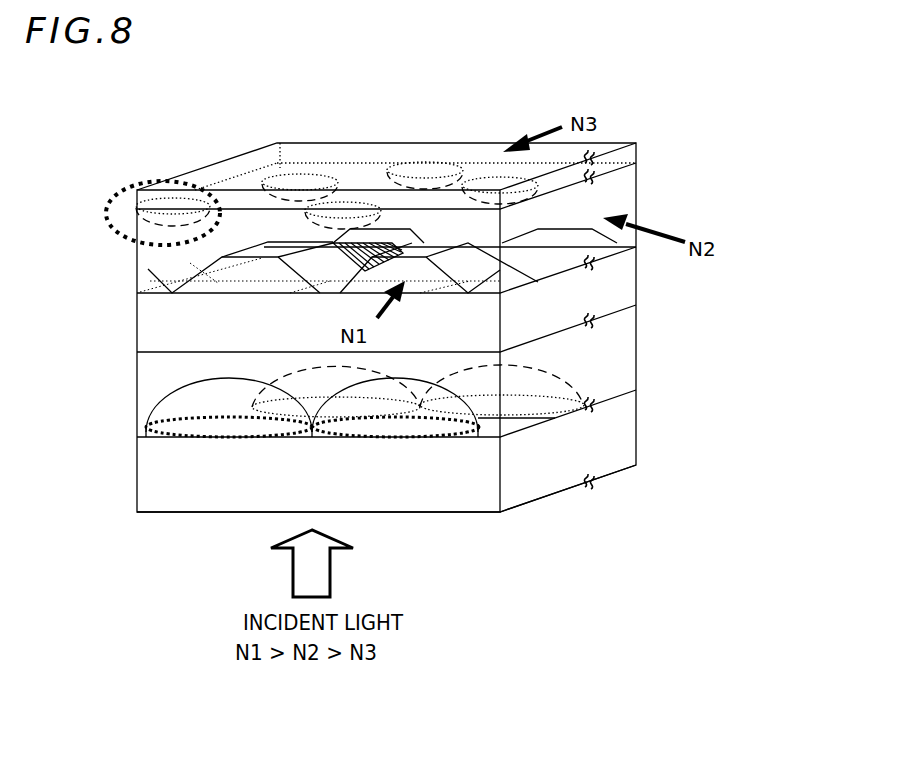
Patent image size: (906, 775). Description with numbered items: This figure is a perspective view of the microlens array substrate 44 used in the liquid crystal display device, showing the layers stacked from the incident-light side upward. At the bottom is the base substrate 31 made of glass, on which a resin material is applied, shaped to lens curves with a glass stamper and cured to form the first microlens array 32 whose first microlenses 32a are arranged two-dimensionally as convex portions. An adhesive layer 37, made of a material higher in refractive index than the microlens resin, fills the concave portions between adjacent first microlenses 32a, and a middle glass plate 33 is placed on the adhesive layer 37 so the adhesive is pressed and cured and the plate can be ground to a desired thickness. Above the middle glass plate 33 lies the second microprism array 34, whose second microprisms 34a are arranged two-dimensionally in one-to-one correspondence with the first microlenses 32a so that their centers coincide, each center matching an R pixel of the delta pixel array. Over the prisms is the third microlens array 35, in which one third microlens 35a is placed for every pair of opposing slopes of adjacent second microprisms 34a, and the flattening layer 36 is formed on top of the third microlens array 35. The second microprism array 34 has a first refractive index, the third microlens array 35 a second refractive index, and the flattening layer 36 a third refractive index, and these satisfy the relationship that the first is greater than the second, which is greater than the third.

The microlens array substrate 44 is at (419, 106).
The flattening layer 36 is at (625, 155).
The third microlens array 35 is at (248, 174).
The third microlens 35a is at (120, 195).
The second microprism array 34 is at (507, 268).
The second microprism 34a is at (554, 272).
The middle glass plate 33 is at (603, 285).
The adhesive layer 37 is at (617, 342).
The first microlens array 32 is at (543, 390).
The first microlens 32a is at (500, 386).
The base substrate 31 is at (617, 455).